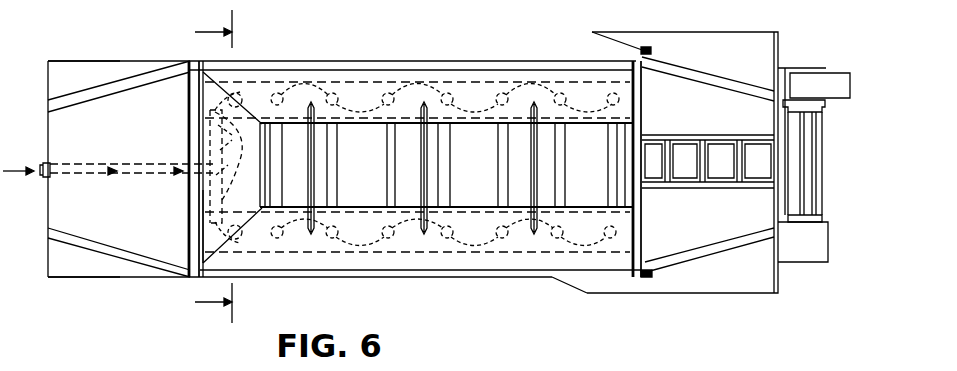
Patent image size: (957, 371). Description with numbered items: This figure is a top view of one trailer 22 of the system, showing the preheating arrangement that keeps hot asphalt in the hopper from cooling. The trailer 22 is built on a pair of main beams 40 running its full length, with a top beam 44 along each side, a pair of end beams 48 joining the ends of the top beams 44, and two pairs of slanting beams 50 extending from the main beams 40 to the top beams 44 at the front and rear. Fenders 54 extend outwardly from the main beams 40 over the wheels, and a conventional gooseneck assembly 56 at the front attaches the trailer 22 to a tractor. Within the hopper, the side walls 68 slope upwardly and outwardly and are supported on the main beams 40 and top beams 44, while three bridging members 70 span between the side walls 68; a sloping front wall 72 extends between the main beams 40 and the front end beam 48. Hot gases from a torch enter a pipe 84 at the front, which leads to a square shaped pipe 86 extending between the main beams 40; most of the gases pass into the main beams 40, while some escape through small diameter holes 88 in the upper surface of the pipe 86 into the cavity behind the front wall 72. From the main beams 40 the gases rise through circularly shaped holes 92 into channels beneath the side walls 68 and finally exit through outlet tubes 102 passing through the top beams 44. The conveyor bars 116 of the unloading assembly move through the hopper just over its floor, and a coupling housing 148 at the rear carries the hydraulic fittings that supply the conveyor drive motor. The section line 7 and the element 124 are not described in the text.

The section line 7- 7 is at (202, 166).
The trailer 22 is at (253, 60).
The main beams 40 is at (87, 278).
The top beam 44 is at (433, 62).
The end beams 48 is at (197, 133).
The slanting beams 50 is at (123, 83).
The fenders 54 is at (722, 43).
The gooseneck assembly 56 is at (97, 60).
The side walls 68 is at (397, 80).
The bridging members 70 is at (314, 148).
The front wall 72 is at (203, 200).
The pipe 84 is at (113, 163).
The square shaped pipe 86 is at (213, 147).
The small diameter holes 88 is at (222, 188).
The small diameter, circularly shaped holes 92 is at (388, 90).
The outlet tubes 102 is at (642, 48).
The bars 116 is at (385, 178).
The base block 124 is at (822, 182).
The coupling housing 148 is at (830, 82).